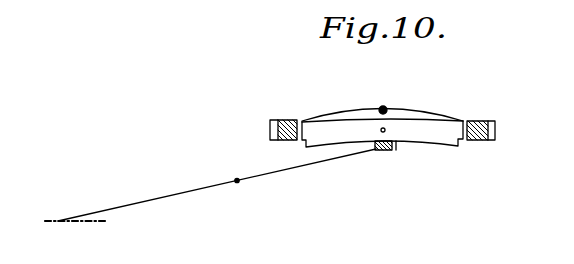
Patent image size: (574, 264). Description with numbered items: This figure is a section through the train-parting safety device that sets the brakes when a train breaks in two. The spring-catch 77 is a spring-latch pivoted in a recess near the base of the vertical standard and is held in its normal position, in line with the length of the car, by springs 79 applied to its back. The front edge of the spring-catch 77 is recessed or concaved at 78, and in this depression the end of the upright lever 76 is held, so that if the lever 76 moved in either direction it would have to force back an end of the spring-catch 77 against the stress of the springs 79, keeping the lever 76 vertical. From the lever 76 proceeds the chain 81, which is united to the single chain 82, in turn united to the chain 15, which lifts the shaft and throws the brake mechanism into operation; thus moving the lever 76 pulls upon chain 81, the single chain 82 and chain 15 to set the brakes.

The chain 15 is at (56, 219).
The upright lever 76 is at (392, 150).
The spring-catch 77 is at (382, 133).
The recess 78 is at (403, 142).
The springs 79 is at (407, 111).
The chain 81 is at (273, 173).
The single chain 82 is at (214, 188).